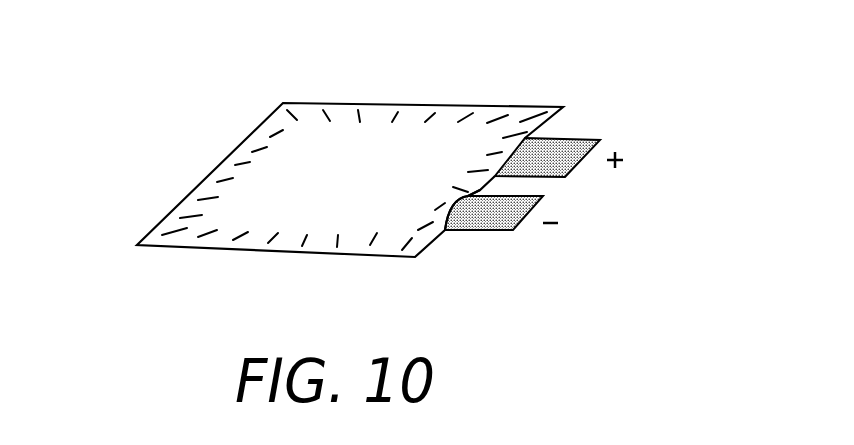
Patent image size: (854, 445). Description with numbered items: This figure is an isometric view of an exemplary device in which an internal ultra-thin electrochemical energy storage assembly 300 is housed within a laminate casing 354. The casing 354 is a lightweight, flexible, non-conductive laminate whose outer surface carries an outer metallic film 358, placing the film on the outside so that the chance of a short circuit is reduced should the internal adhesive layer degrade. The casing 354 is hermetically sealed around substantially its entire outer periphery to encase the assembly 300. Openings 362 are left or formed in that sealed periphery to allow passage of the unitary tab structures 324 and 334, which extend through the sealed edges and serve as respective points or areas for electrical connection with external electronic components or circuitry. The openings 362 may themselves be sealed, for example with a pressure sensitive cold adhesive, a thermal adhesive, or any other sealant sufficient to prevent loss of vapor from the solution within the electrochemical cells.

The internal ultra-thin electrochemical energy storage assembly 300 is at (155, 128).
The outer casing 354 is at (333, 188).
The outer metallic film 358 is at (420, 188).
The openings 362 is at (480, 190).
The unitary tab structure 324 is at (570, 138).
The unitary tab structure 334 is at (497, 231).